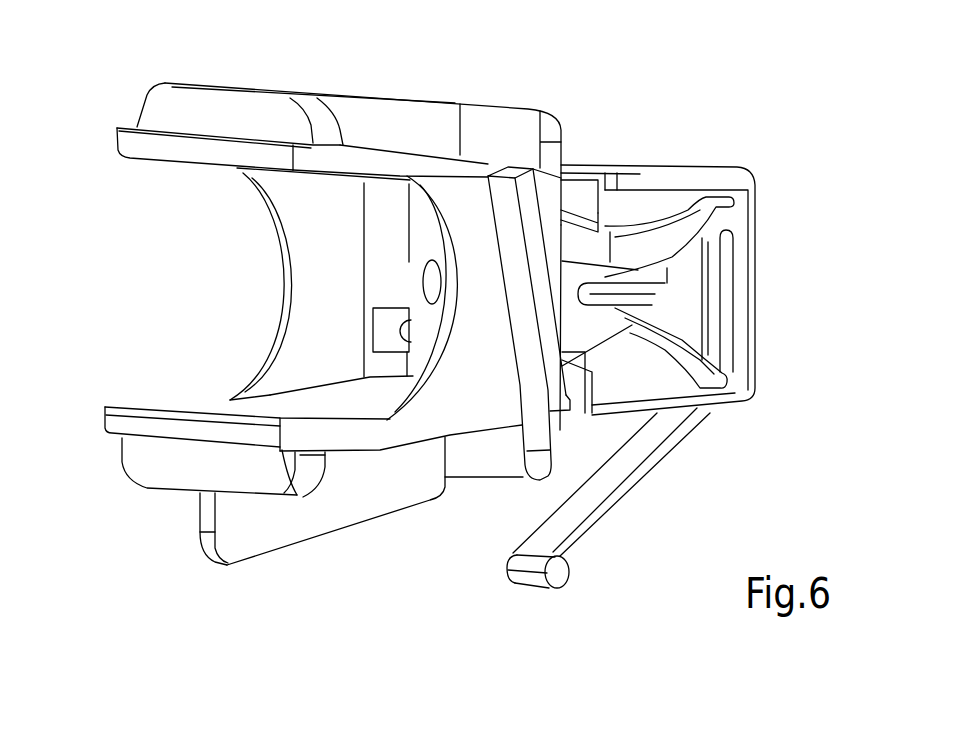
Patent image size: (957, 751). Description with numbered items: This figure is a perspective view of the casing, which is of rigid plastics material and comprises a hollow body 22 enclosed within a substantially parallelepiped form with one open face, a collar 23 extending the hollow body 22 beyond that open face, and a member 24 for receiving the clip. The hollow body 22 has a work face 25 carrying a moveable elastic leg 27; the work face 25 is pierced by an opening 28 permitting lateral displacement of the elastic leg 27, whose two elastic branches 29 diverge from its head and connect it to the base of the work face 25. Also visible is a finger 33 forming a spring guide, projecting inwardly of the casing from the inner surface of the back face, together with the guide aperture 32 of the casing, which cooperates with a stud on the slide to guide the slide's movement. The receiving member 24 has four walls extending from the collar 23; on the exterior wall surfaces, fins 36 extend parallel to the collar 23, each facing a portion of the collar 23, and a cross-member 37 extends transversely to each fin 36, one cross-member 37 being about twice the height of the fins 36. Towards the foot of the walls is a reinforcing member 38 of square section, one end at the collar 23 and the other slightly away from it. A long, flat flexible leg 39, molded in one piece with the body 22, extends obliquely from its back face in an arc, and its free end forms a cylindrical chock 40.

The hollow body 22 is at (460, 340).
The collar 23 is at (500, 130).
The member for receiving the clip 24 is at (443, 500).
The work face 25 is at (752, 297).
The elastic leg 27 is at (567, 293).
The opening 28 is at (647, 240).
The elastic branches 29 is at (715, 240).
The guide aperture 32 is at (417, 313).
The finger 33 is at (622, 300).
The fins 36 is at (178, 107).
The cross-member 37 is at (353, 113).
The reinforcing member 38 is at (527, 210).
The flexible leg 39 is at (614, 472).
The cylindrical chock 40 is at (530, 570).